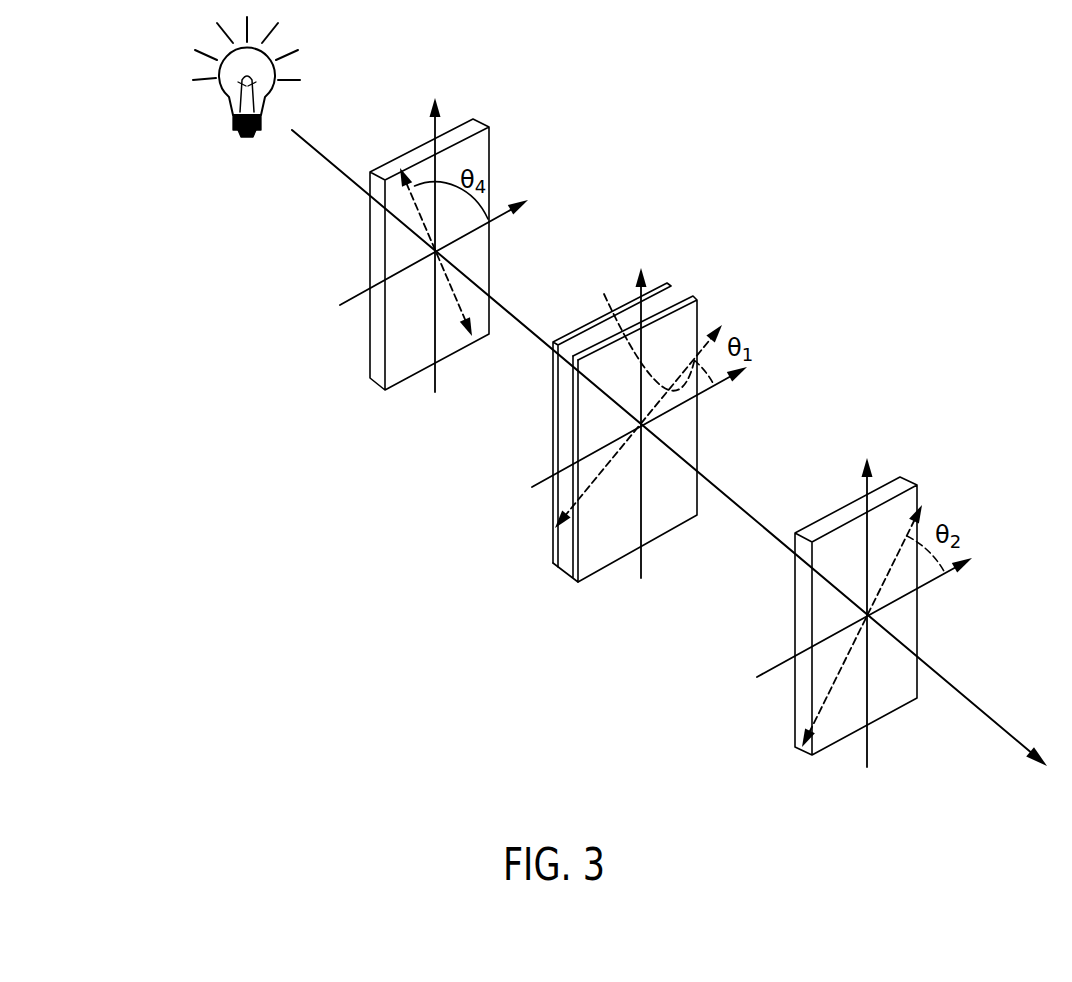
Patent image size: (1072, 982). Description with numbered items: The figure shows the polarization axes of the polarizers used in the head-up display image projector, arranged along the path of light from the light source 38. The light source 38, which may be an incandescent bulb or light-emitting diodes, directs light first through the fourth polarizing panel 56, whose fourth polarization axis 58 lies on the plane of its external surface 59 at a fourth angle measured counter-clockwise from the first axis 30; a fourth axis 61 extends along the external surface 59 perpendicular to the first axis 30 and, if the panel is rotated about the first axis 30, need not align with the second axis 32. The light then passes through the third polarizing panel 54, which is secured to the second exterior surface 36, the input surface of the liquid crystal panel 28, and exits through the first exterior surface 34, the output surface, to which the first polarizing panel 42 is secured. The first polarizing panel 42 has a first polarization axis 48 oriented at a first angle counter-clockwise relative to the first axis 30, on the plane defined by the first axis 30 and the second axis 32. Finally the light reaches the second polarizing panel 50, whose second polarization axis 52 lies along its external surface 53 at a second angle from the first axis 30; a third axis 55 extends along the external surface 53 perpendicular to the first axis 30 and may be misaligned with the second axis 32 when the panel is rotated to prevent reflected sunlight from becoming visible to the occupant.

The liquid crystal panel 28 is at (625, 416).
The first axis 30 is at (360, 293).
The second axis 32 is at (644, 563).
The first exterior surface 34 is at (576, 564).
The second exterior surface 36 is at (556, 548).
The light source 38 is at (224, 93).
The first polarizing panel 42 is at (699, 301).
The first polarization axis 48 is at (643, 327).
The second polarizing panel 50 is at (928, 470).
The second polarization axis 52 is at (908, 530).
The external surface 53 is at (897, 678).
The third polarizing panel 54 is at (667, 284).
The third axis 55 is at (865, 754).
The fourth polarizing panel 56 is at (502, 105).
The fourth polarization axis 58 is at (397, 166).
The external surface 59 is at (410, 333).
The fourth axis 61 is at (433, 385).